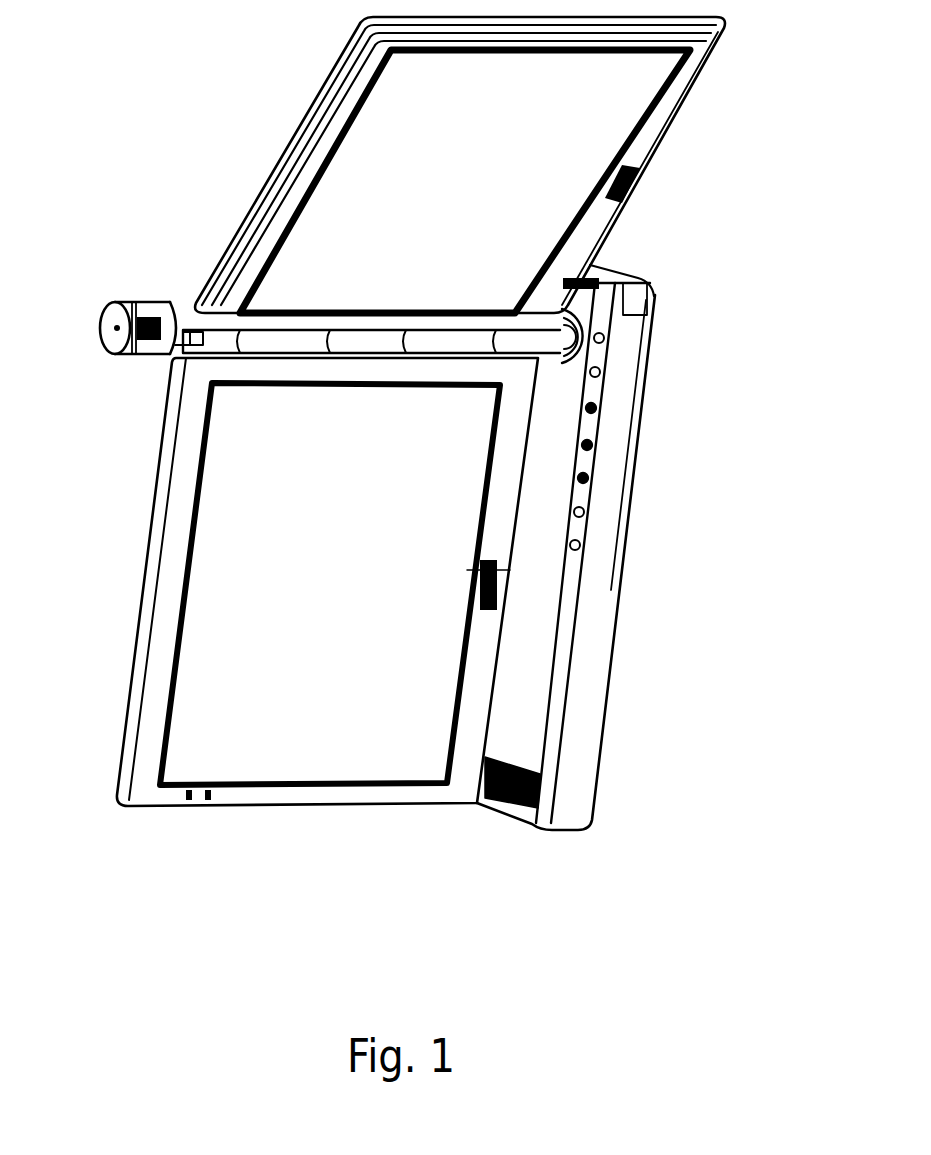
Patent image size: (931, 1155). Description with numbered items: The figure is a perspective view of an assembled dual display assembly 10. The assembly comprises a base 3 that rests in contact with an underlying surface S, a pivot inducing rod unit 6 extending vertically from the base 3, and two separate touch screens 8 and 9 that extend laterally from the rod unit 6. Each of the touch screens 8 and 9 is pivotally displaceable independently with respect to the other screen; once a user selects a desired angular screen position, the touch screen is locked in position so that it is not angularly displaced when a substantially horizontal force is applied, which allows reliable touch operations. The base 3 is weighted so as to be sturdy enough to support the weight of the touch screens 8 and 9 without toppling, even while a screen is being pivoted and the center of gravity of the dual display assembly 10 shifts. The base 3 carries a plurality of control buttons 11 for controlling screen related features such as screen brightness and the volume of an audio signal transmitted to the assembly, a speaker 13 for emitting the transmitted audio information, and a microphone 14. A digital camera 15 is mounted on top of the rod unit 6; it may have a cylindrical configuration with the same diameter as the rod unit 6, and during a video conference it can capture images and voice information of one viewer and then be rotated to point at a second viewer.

The base 3 is at (553, 562).
The pivot inducing rod unit 6 is at (180, 286).
The touch screen 8 is at (300, 690).
The touch screen 9 is at (563, 155).
The dual display assembly 10 is at (266, 130).
The control buttons 11 is at (607, 447).
The speaker 13 is at (540, 778).
The microphone 14 is at (593, 298).
The digital camera 15 is at (155, 312).
The underlying surface S is at (690, 534).